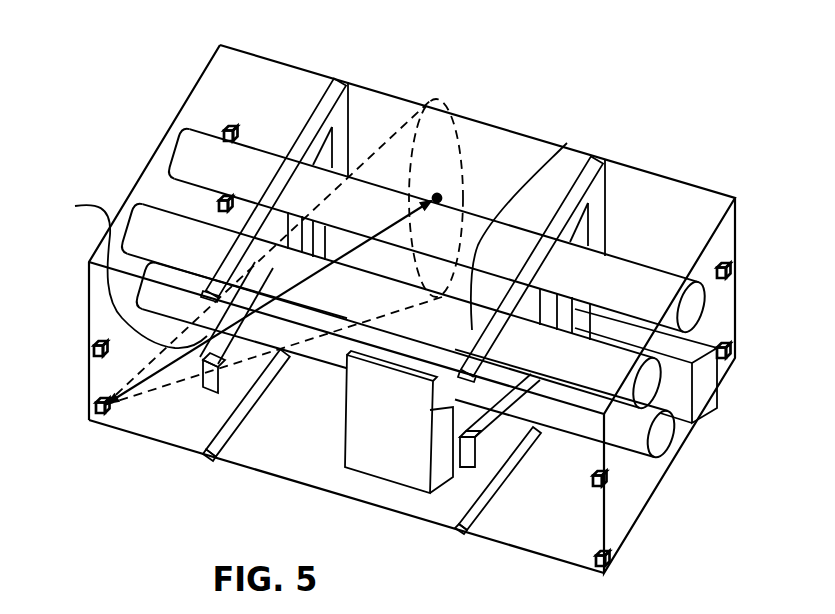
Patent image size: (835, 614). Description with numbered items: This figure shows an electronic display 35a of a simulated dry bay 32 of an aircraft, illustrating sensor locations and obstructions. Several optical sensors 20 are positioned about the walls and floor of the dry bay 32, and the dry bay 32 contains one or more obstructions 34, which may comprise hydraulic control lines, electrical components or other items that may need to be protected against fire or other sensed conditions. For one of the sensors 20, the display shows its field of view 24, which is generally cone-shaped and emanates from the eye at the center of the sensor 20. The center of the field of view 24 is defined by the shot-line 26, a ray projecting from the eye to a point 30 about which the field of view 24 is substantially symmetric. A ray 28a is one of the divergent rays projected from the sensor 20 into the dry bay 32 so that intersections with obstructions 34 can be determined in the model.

The sensor 20 is at (230, 130).
The field of view 24 is at (127, 375).
The shot-line 26 is at (150, 287).
The ray 28a is at (172, 372).
The point 30 is at (437, 194).
The dry bay 32 is at (183, 100).
The obstruction 34 is at (578, 192).
The electronic display 35a is at (602, 117).